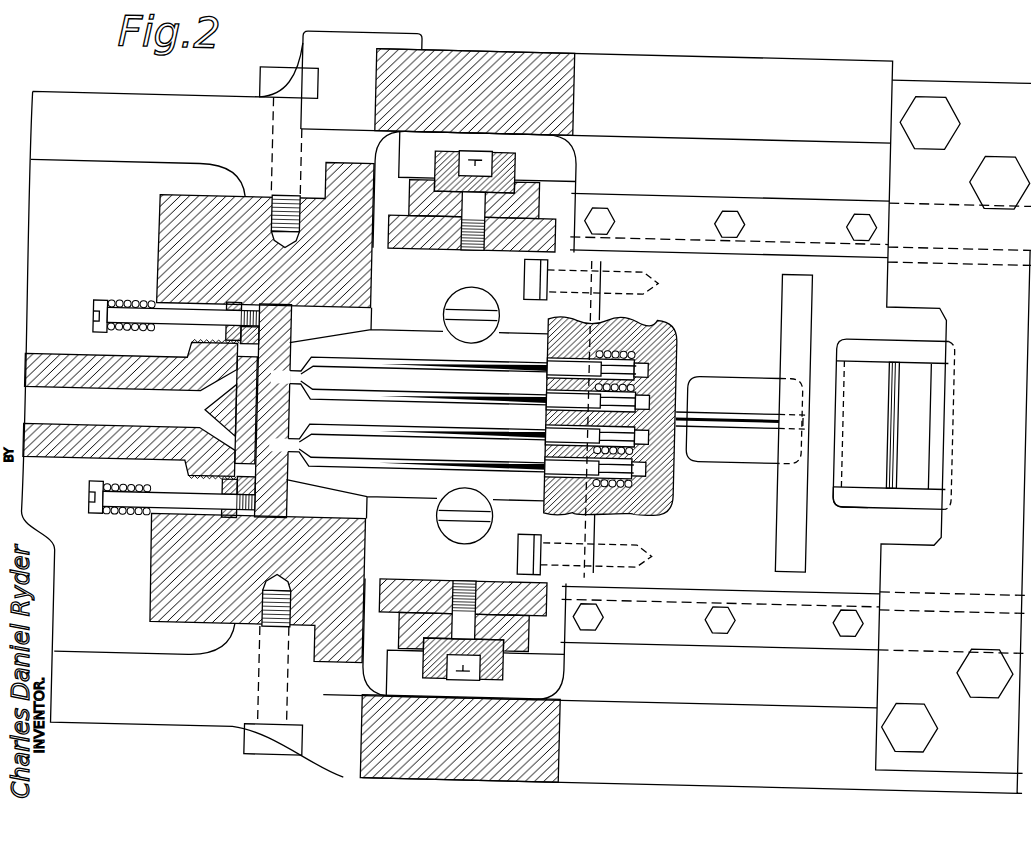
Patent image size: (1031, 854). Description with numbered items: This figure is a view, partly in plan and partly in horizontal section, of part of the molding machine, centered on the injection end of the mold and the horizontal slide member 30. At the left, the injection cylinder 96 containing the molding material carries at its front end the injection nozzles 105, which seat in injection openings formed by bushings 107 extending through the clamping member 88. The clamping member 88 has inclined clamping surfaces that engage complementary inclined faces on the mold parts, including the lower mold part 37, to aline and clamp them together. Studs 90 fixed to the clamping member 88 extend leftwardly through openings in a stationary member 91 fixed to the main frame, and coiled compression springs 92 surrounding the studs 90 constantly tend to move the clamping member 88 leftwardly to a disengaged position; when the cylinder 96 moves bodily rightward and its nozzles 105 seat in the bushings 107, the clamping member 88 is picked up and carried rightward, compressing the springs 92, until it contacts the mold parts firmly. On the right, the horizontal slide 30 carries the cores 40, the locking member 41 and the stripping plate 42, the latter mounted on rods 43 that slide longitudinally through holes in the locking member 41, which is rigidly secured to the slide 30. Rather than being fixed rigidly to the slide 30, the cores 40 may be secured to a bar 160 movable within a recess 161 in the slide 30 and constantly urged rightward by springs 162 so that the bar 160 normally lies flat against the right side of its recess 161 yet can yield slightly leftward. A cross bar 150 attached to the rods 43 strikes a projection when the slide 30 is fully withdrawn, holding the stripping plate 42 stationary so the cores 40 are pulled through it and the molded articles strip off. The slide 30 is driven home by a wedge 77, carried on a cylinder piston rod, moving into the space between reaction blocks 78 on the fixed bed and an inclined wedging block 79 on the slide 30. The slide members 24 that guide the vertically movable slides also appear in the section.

The slide members 24 is at (509, 156).
The horizontal slide member 30 is at (658, 420).
The lower mold part 37 is at (417, 406).
The cores 40 is at (548, 350).
The locking member 41 is at (586, 524).
The stripping plate 42 is at (552, 483).
The rods 43 is at (723, 411).
The wedge 77 is at (911, 364).
The reaction blocks 78 is at (938, 427).
The inclined wedging block 79 is at (868, 466).
The clamping member 88 is at (295, 321).
The studs 90 is at (139, 318).
The stationary member 91 is at (161, 590).
The coiled compression springs 92 is at (152, 334).
The cylinder 96 is at (63, 365).
The injection nozzles 105 is at (300, 349).
The bushings 107 is at (283, 416).
The cross bar 150 is at (805, 302).
The bar 160 is at (675, 345).
The recess 161 is at (643, 322).
The springs 162 is at (604, 305).